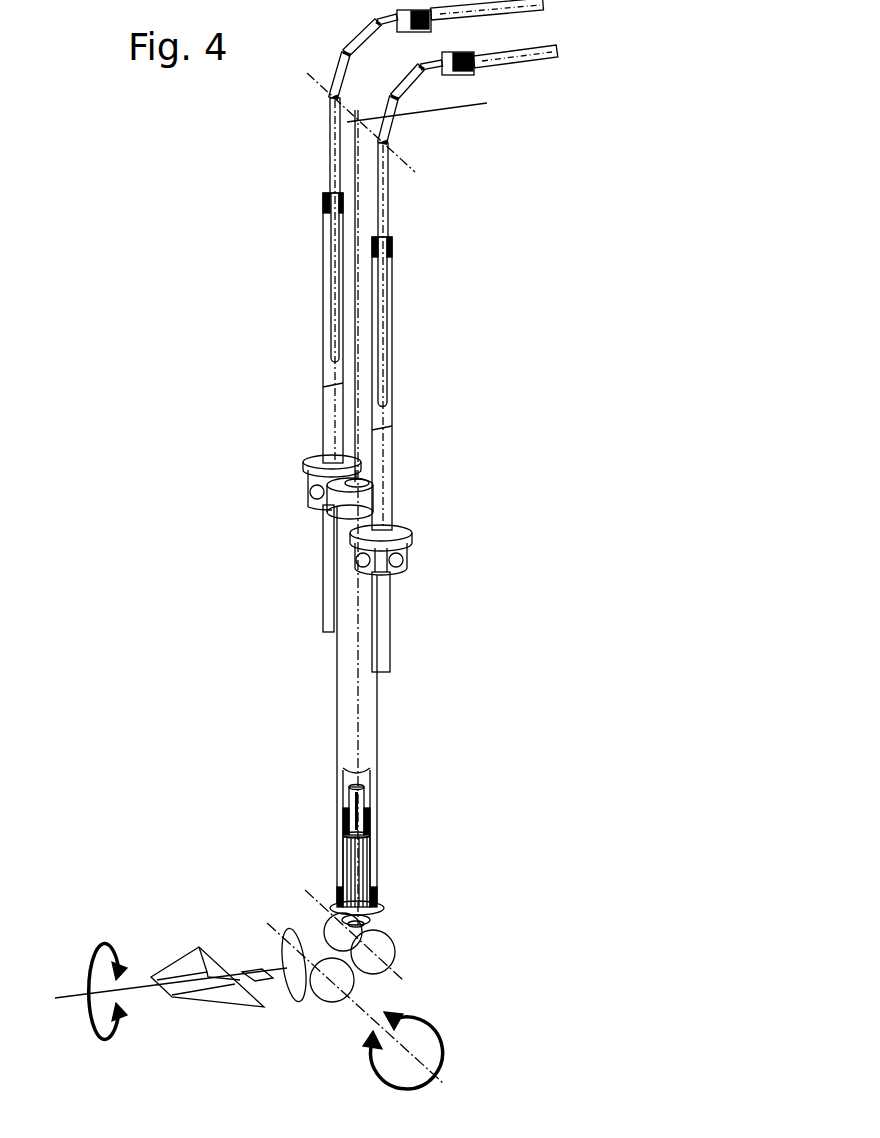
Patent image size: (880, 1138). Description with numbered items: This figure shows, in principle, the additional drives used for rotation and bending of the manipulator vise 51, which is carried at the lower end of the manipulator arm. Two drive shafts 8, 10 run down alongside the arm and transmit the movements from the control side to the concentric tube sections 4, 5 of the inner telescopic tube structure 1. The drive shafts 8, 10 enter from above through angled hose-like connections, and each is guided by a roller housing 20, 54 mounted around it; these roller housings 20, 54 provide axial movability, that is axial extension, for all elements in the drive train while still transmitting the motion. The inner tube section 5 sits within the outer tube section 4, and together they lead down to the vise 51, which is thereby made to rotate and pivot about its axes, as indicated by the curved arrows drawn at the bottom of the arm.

The inner telescopic tube 1 is at (397, 499).
The concentric tube section 4 is at (363, 730).
The concentric tube section 5 is at (366, 805).
The drive shaft 8 is at (390, 383).
The drive shaft 10 is at (323, 298).
The roller housing 20 is at (406, 549).
The vise 51 is at (236, 997).
The roller housing 54 is at (310, 488).